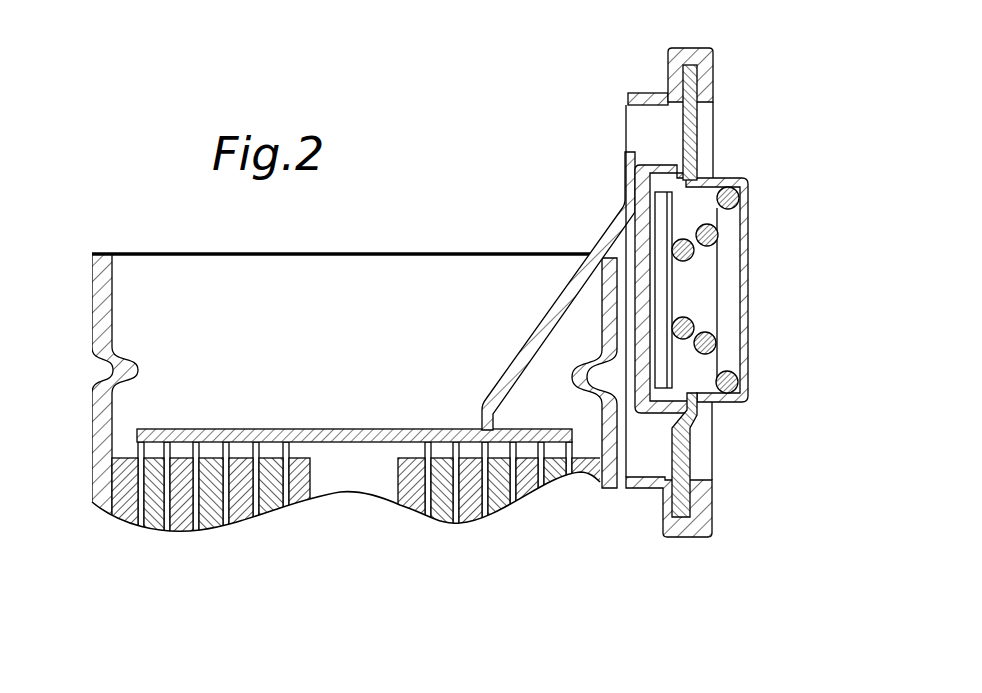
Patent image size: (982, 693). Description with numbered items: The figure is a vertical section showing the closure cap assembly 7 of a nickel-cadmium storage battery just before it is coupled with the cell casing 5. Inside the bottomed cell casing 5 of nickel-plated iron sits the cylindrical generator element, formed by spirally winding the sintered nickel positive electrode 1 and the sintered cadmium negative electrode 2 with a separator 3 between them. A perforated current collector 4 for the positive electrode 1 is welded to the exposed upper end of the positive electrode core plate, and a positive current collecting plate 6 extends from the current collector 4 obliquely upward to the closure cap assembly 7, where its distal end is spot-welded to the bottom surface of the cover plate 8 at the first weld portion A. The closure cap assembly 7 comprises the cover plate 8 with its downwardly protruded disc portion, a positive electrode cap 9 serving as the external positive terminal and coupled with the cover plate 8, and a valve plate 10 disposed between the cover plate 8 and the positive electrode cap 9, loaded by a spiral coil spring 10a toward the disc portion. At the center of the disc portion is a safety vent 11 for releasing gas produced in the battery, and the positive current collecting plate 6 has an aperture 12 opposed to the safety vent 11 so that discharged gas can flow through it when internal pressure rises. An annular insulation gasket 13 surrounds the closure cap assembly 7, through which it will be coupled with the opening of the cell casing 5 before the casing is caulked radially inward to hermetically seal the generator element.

The sintered nickel positive electrode 1 is at (266, 505).
The sintered cadmium negative electrode 2 is at (300, 497).
The separator 3 is at (196, 512).
The perforated current collector 4 is at (353, 445).
The cell casing 5 is at (102, 316).
The positive current collecting plate 6 is at (508, 374).
The closure cap assembly 7 is at (754, 286).
The cover plate 8 is at (678, 443).
The positive electrode cap 9 is at (750, 310).
The valve plate 10 is at (677, 270).
The spiral coil spring 10a is at (761, 282).
The safety vent 11 is at (648, 273).
The aperture 12 is at (529, 291).
The annular insulation gasket 13 is at (698, 532).
The first weld portion A is at (626, 190).